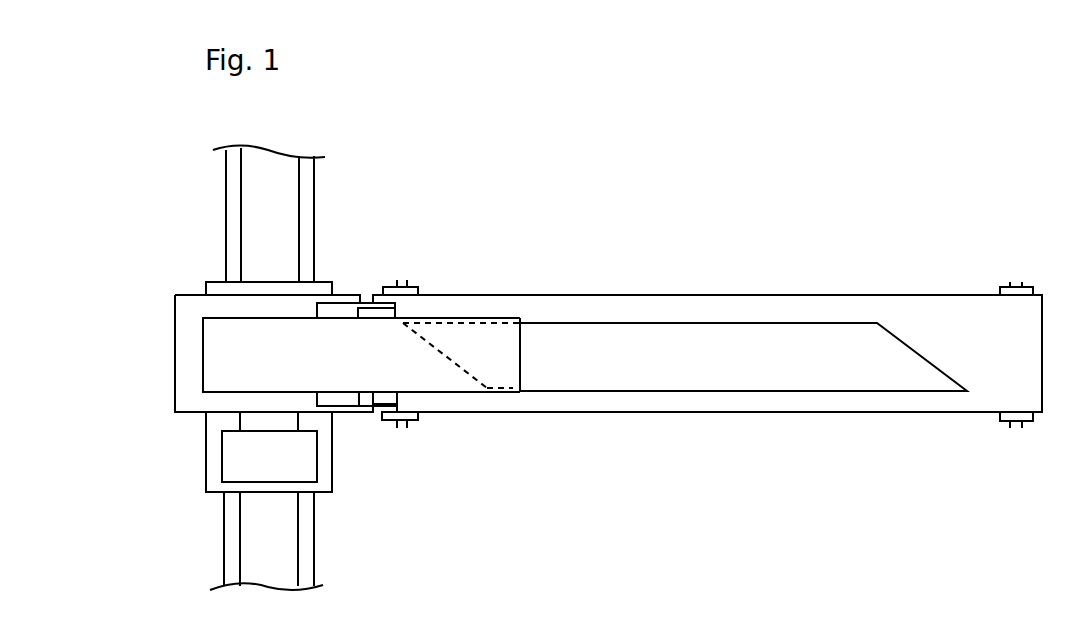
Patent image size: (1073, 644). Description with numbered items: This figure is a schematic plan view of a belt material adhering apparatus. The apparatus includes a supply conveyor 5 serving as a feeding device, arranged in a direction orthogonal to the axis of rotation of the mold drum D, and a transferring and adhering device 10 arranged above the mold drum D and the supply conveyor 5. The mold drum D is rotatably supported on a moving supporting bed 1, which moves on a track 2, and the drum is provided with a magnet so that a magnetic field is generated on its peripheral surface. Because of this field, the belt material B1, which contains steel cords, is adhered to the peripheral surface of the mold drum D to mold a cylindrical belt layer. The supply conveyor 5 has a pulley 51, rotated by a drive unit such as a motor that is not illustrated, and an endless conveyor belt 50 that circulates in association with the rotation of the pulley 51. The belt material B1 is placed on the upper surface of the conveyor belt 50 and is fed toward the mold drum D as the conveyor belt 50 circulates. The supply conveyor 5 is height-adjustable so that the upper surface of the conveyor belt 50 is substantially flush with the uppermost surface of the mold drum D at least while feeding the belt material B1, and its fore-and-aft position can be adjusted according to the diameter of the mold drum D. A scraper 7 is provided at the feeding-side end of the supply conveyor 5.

The moving supporting bed 1 is at (225, 462).
The track 2 is at (233, 195).
The supply conveyor 5 is at (948, 294).
The scraper 7 is at (340, 402).
The transferring and adhering device 10 is at (438, 318).
The conveyor belt 50 is at (930, 403).
The pulley 51 is at (402, 423).
The mold drum D is at (190, 383).
The belt material B1 is at (786, 380).